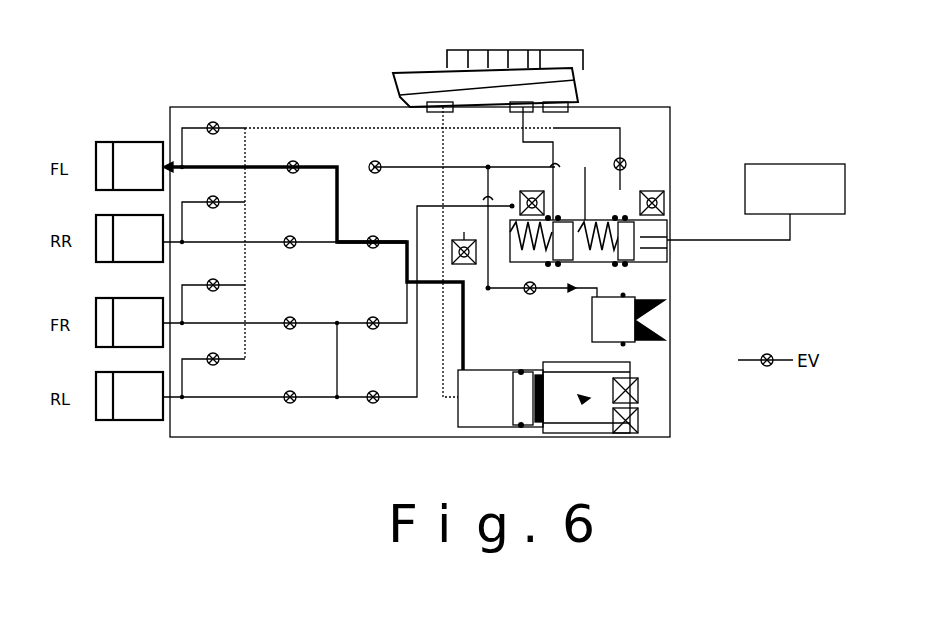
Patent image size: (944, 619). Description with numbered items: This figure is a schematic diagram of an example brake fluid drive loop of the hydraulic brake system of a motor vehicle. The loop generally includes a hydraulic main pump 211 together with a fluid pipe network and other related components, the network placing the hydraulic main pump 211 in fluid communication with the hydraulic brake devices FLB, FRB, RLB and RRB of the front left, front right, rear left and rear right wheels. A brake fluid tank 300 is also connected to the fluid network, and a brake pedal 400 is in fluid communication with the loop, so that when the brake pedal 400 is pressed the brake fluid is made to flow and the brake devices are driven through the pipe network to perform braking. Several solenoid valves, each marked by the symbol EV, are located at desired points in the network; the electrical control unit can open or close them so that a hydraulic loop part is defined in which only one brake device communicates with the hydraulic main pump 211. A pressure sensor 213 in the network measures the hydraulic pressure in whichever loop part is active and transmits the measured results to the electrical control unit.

The hydraulic main pump 211 is at (620, 440).
The pressure sensor 213 is at (475, 243).
The brake fluid tank 300 is at (488, 57).
The brake pedal 400 is at (756, 202).